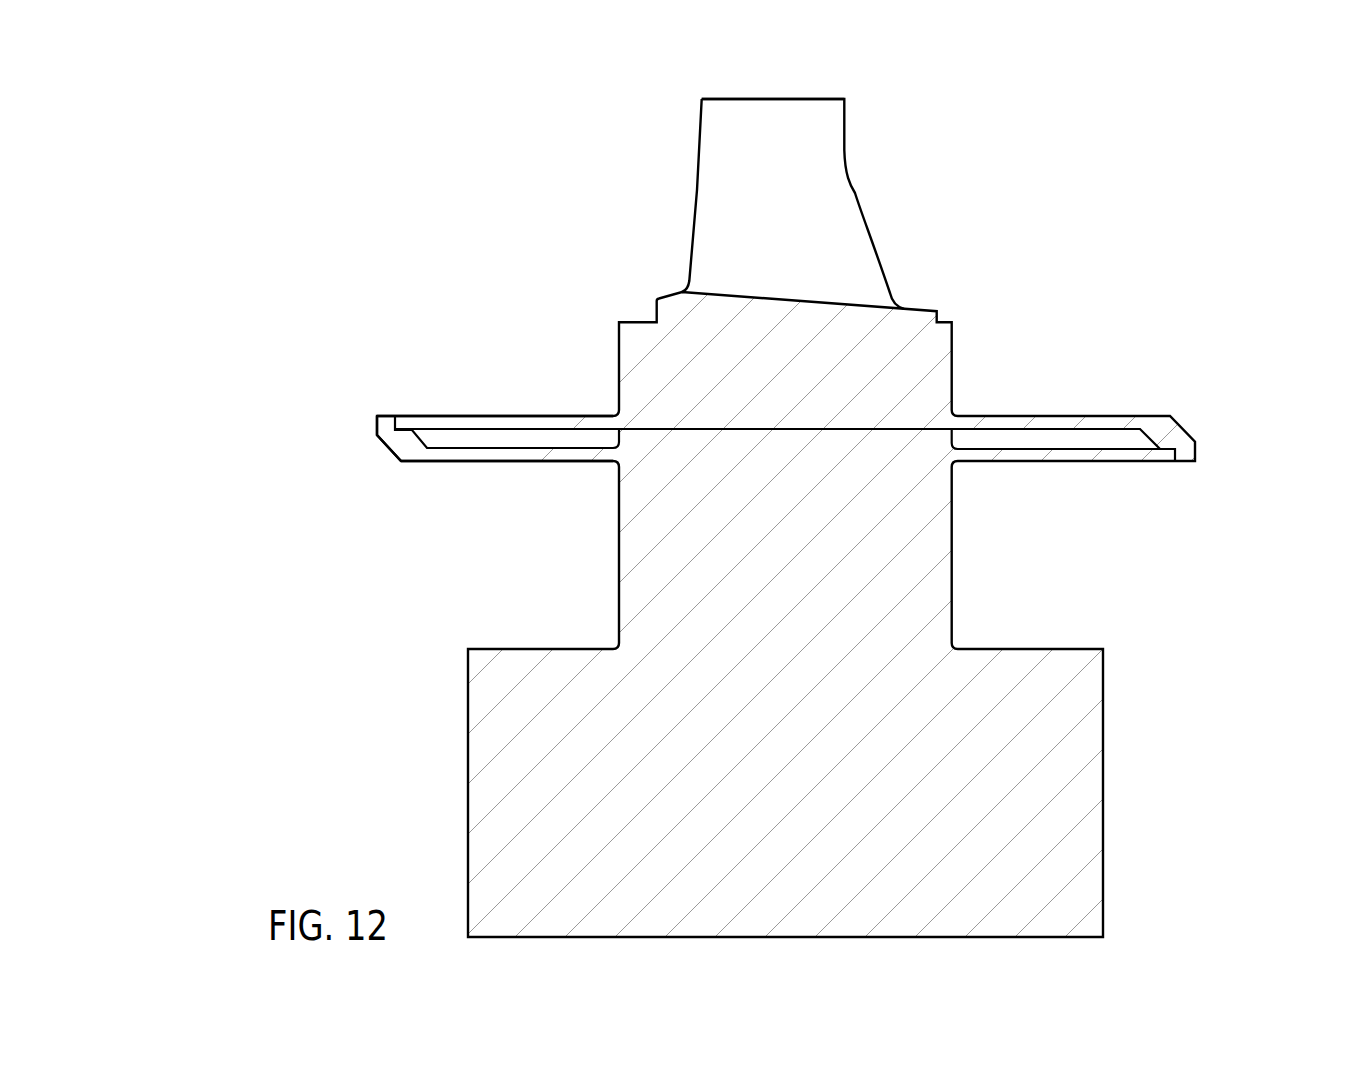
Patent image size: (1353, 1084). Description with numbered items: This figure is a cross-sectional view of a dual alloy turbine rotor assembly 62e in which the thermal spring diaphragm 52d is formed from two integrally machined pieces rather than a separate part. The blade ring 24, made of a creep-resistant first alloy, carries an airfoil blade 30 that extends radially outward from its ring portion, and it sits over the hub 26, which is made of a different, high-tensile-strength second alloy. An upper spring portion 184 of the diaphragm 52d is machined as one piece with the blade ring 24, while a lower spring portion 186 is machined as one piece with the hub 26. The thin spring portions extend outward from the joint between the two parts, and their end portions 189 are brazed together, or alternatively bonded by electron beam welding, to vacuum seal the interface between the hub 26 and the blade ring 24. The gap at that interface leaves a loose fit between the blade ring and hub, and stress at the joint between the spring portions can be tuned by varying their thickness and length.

The rotor assembly 62e is at (707, 496).
The blade ring 24 is at (806, 180).
The airfoil blade 30 is at (800, 95).
The hub 26 is at (1103, 775).
The diaphragm 52d is at (708, 437).
The upper spring portion 184 is at (495, 367).
The lower spring portion 186 is at (507, 508).
The end portions 189 is at (356, 391).